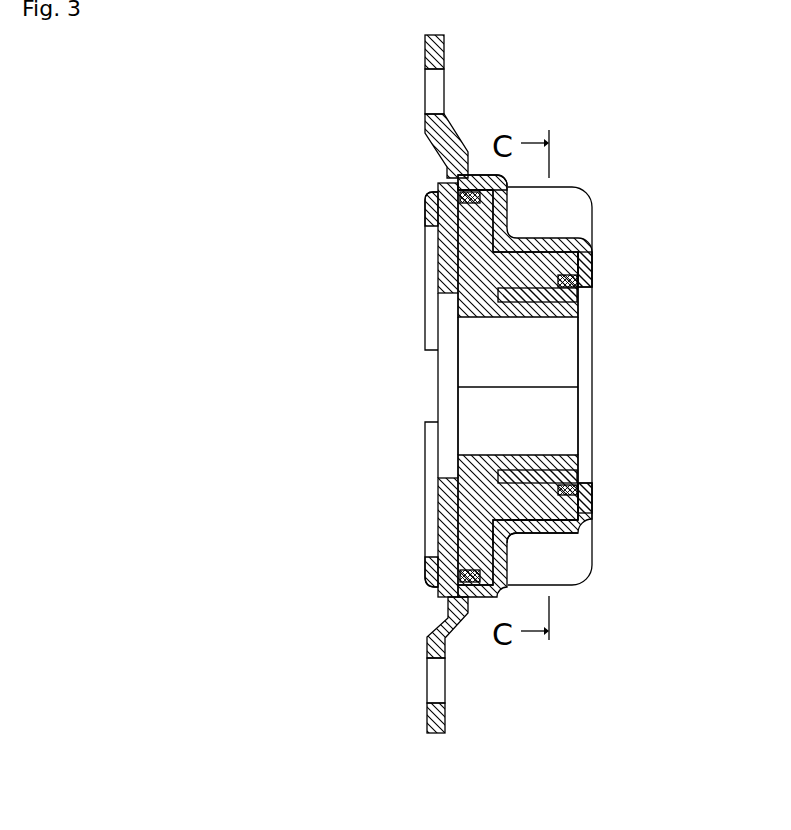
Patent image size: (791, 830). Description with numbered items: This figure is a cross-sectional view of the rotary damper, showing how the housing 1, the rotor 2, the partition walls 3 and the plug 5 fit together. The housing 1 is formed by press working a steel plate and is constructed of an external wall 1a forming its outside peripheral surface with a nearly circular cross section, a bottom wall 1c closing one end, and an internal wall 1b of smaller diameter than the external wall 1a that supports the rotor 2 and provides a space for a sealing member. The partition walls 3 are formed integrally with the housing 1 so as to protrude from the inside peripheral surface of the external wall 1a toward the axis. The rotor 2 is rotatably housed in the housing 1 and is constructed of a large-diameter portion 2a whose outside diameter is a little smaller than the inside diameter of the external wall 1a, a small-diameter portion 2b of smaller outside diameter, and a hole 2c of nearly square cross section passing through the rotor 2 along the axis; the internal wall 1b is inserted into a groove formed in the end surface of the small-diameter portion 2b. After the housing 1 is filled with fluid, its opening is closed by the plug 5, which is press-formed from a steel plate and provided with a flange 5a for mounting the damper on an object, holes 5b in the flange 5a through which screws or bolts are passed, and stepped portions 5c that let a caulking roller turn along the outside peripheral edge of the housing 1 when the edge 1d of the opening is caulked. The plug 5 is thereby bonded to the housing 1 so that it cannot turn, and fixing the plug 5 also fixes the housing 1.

The housing 1 is at (593, 498).
The external wall 1a is at (478, 177).
The internal wall 1b is at (553, 456).
The bottom wall 1c is at (590, 268).
The edge of the opening of the housing 1d is at (425, 208).
The rotor 2 is at (465, 264).
The large-diameter portion 2a is at (548, 532).
The small-diameter portion 2b is at (513, 545).
The hole 2c is at (550, 366).
The partition walls 3 is at (533, 243).
The plug 5 is at (440, 252).
The flange 5a is at (425, 50).
The holes 5b is at (432, 90).
The stepped portions 5c is at (448, 170).